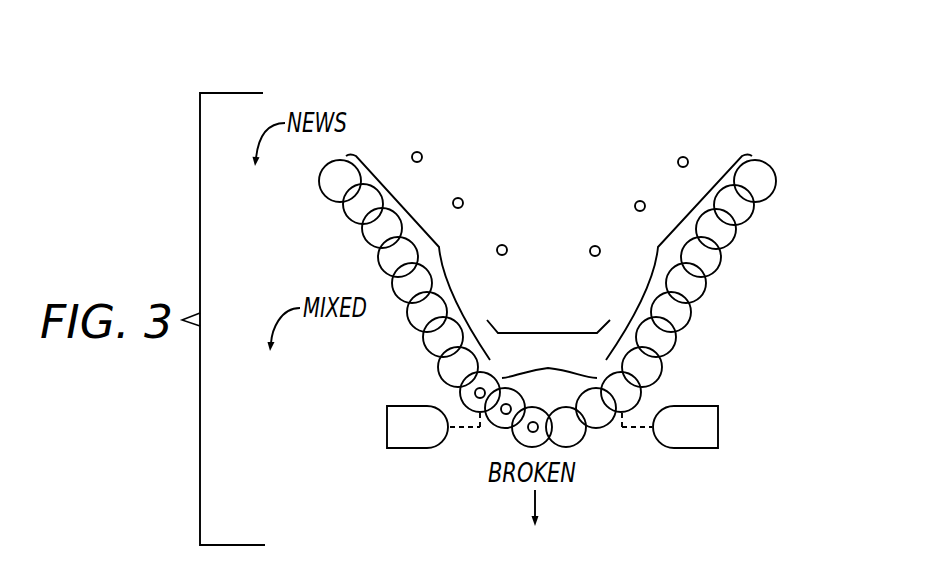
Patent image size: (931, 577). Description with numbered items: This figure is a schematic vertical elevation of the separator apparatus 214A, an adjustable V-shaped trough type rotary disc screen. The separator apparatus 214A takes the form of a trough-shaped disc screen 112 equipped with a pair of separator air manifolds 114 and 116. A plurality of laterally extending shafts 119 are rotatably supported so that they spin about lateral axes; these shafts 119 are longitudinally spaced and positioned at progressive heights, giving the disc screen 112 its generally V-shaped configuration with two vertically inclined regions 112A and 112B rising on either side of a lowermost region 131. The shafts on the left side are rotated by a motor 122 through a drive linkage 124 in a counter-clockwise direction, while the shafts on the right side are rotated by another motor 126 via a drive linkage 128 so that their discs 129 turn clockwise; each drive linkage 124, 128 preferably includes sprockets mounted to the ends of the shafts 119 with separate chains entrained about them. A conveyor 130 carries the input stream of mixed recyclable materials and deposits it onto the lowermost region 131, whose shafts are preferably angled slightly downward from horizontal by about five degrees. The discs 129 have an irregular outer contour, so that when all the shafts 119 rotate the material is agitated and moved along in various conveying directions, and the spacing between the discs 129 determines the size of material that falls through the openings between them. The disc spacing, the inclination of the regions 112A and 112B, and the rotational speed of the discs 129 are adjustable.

The trough-shaped disc screen 112 is at (714, 348).
The vertically inclined region 112A is at (438, 247).
The vertically inclined region 112B is at (655, 247).
The separator air manifold 114 is at (422, 143).
The separator air manifold 116 is at (667, 148).
The shafts 119 is at (530, 433).
The motor 122 is at (387, 413).
The drive linkage 124 is at (460, 422).
The motor 126 is at (718, 413).
The drive linkage 128 is at (640, 417).
The discs 129 is at (603, 413).
The conveyor 130 is at (520, 333).
The lowermost region 131 is at (549, 356).
The separator apparatus 214A is at (741, 292).